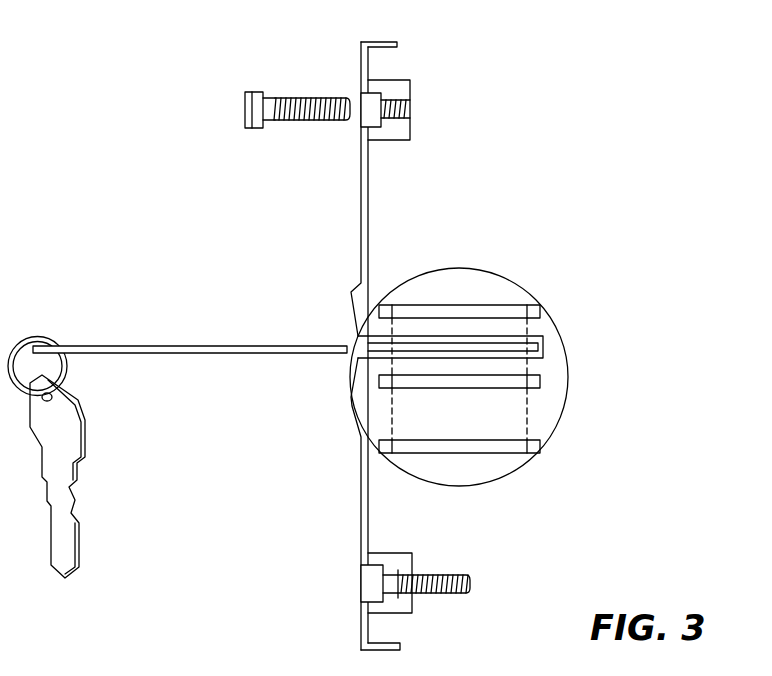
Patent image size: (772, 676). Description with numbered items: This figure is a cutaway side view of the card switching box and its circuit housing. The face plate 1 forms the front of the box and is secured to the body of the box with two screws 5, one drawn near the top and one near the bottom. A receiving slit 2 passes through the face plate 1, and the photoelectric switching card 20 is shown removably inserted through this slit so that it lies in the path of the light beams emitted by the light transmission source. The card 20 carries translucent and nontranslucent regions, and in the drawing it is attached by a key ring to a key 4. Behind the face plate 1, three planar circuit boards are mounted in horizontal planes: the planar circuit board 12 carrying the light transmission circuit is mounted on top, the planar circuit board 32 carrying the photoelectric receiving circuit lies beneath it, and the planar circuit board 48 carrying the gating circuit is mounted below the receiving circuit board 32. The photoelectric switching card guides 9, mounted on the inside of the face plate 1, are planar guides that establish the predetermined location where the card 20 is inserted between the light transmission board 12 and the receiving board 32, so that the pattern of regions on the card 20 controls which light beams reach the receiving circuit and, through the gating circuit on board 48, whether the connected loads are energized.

The face plate 1 is at (418, 332).
The receiving slit 2 is at (350, 296).
The key 4 is at (62, 499).
The screws 5 is at (273, 100).
The photoelectric switching card guides 9 is at (546, 337).
The planar circuit board 12 is at (518, 303).
The photoelectric switching card 20 is at (147, 346).
The planar circuit board 32 is at (530, 388).
The planar circuit board 48 is at (518, 452).